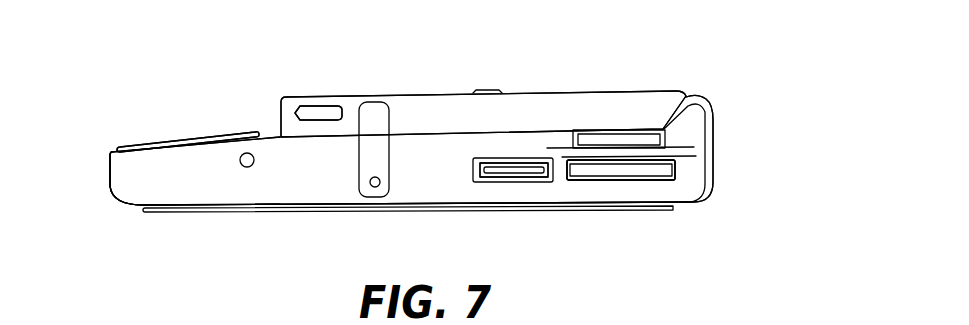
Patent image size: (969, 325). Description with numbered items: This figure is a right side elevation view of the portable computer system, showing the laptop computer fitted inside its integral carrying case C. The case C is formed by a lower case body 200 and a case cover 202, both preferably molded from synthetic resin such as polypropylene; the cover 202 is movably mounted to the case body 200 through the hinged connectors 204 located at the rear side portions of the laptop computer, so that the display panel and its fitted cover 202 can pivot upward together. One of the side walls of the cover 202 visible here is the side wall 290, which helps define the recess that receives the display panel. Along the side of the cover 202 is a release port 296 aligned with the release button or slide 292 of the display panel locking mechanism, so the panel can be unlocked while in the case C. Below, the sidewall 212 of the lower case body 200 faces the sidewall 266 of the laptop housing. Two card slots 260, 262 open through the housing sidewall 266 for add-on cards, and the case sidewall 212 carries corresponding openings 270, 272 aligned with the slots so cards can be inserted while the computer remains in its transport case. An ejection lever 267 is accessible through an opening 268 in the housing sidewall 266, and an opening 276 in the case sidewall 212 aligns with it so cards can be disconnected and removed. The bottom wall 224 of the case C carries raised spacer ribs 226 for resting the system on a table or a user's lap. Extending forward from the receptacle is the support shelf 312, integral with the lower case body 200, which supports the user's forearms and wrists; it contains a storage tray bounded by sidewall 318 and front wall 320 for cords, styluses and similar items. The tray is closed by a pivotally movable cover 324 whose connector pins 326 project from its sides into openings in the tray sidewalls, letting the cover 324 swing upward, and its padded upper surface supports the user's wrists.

The lower case body 200 is at (352, 222).
The case cover 202 is at (575, 82).
The hinged connector 204 is at (710, 78).
The sidewall 212 is at (287, 179).
The bottom wall 224 is at (453, 198).
The spacer ribs 226 is at (408, 211).
The card slot 260 is at (668, 133).
The card slot 262 is at (675, 165).
The sidewall 266 is at (568, 182).
The ejection lever 267 is at (508, 183).
The opening 268 is at (531, 176).
The opening 270 is at (668, 139).
The opening 272 is at (676, 186).
The opening 276 is at (479, 150).
The side wall 290 is at (640, 100).
The release button 292 is at (307, 106).
The release port 296 is at (329, 106).
The support shelf 312 is at (228, 124).
The sidewall 318 is at (191, 189).
The front wall 320 is at (110, 184).
The movable cover 324 is at (172, 146).
The connector pin 326 is at (251, 167).
The carrying case C is at (700, 45).